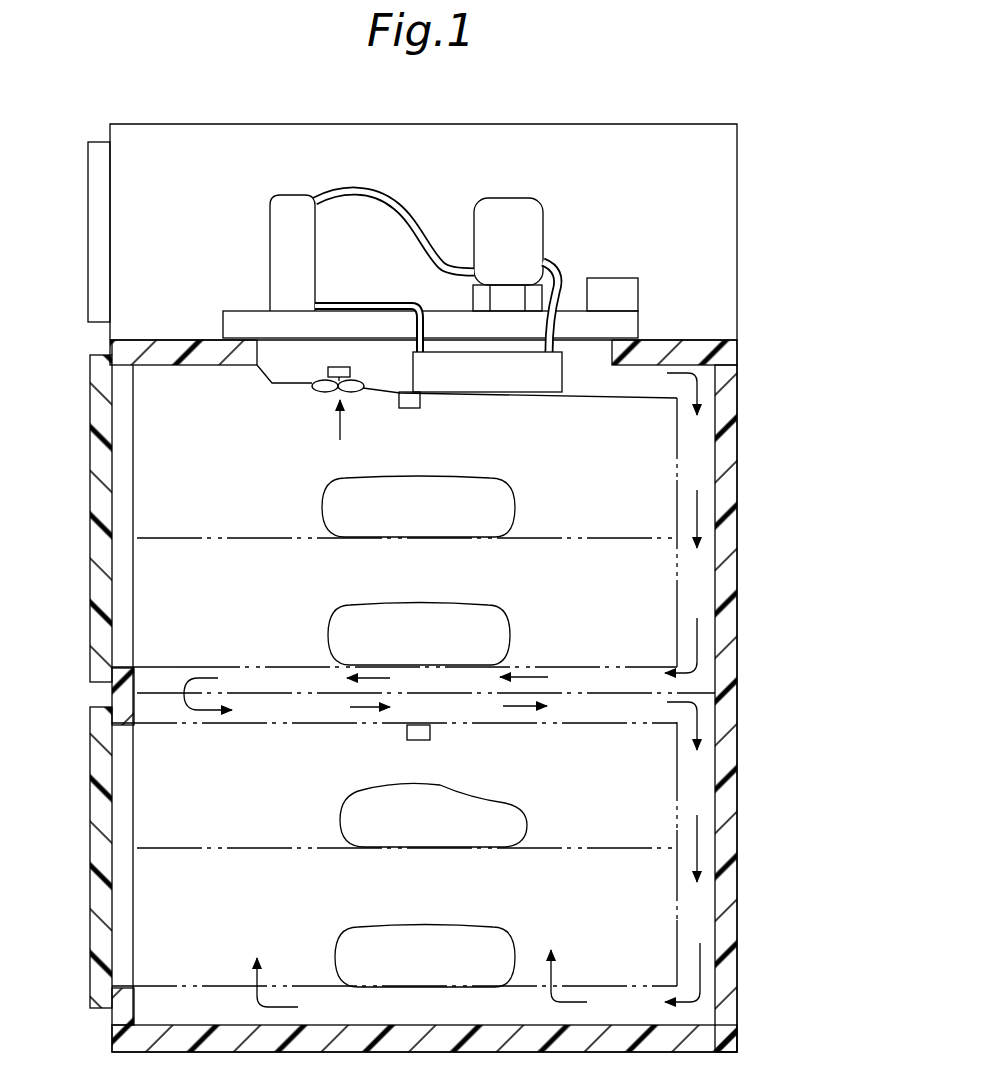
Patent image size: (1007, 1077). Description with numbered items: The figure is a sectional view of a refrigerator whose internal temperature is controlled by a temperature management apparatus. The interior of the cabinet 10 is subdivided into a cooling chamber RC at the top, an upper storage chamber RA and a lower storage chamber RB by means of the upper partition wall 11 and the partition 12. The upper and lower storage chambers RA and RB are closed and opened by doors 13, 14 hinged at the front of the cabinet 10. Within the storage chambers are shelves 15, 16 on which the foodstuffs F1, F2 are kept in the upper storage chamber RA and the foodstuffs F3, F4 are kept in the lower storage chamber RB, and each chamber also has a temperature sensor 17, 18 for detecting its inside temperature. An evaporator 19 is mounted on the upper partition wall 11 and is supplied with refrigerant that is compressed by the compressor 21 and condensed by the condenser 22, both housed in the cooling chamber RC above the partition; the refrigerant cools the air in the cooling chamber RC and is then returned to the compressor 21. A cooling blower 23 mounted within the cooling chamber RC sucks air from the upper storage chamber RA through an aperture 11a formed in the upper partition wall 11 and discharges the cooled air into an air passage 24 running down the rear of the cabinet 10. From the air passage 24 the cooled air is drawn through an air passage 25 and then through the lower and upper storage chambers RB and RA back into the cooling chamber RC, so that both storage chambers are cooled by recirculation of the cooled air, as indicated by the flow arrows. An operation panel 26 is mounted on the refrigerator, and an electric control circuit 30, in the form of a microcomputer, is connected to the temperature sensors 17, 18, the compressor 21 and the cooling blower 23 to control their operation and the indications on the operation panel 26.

The cabinet 10 is at (740, 455).
The upper partition wall 11 is at (628, 402).
The aperture 11a is at (363, 393).
The partition 12 is at (523, 667).
The door 13 is at (88, 465).
The door 14 is at (88, 790).
The shelf 15 is at (533, 538).
The shelf 16 is at (552, 847).
The temperature sensor 17 is at (420, 398).
The temperature sensor 18 is at (430, 728).
The evaporator 19 is at (562, 372).
The compressor 21 is at (518, 198).
The condenser 22 is at (268, 222).
The cooling blower 23 is at (320, 394).
The air passage 24 is at (698, 606).
The air passage 25 is at (693, 922).
The operation panel 26 is at (88, 208).
The electric control circuit 30 is at (600, 278).
The upper storage chamber RA is at (205, 468).
The lower storage chamber RB is at (210, 806).
The cooling chamber RC is at (592, 343).
The foodstuff F1 is at (333, 492).
The foodstuff F2 is at (333, 622).
The foodstuff F3 is at (362, 790).
The foodstuff F4 is at (357, 930).